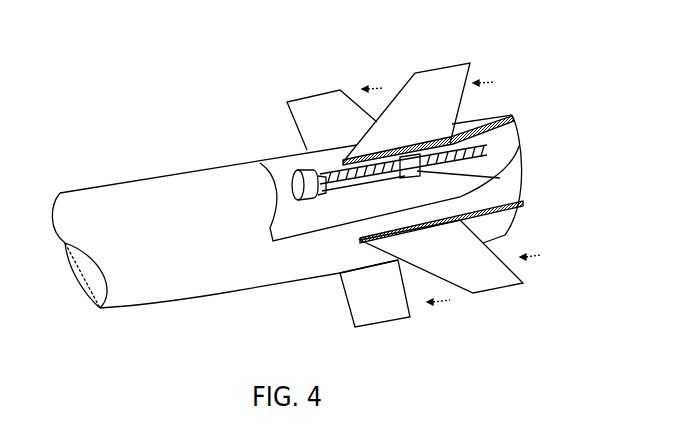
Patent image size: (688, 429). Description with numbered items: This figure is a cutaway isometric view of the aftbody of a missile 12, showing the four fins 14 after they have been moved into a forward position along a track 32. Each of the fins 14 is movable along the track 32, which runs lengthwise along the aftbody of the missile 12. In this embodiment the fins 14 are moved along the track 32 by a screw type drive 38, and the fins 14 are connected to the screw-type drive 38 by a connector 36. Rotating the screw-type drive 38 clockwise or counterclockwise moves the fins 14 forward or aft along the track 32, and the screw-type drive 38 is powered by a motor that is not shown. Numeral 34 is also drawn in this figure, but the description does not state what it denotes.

The missile 12 is at (147, 210).
The fins 14 is at (450, 87).
The track 32 is at (475, 137).
The slider block 34 is at (495, 149).
The connector 36 is at (500, 177).
The screw type drive 38 is at (293, 186).